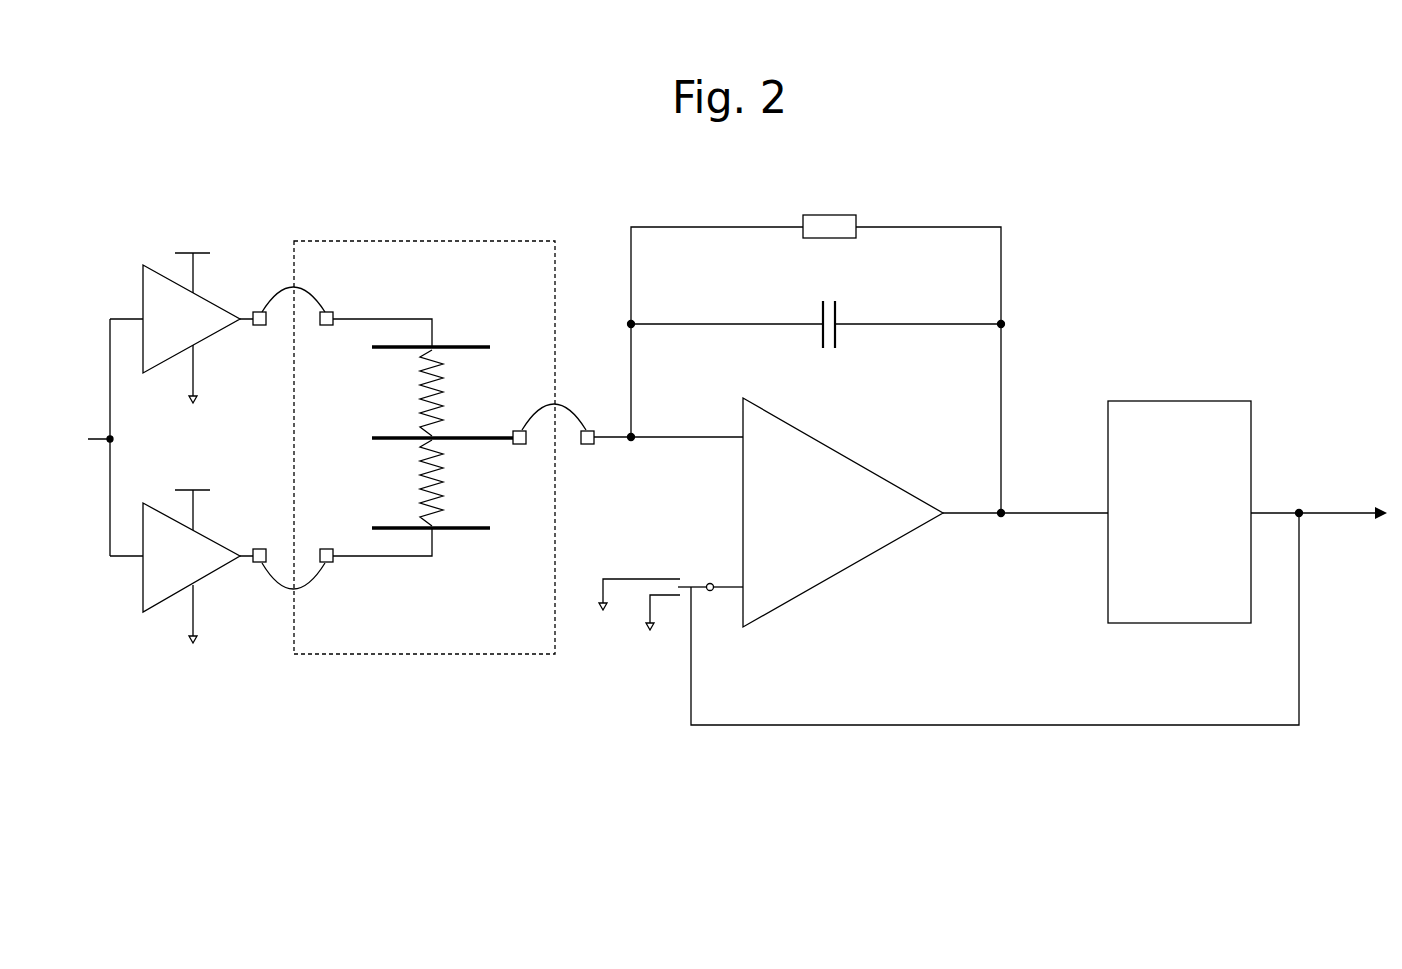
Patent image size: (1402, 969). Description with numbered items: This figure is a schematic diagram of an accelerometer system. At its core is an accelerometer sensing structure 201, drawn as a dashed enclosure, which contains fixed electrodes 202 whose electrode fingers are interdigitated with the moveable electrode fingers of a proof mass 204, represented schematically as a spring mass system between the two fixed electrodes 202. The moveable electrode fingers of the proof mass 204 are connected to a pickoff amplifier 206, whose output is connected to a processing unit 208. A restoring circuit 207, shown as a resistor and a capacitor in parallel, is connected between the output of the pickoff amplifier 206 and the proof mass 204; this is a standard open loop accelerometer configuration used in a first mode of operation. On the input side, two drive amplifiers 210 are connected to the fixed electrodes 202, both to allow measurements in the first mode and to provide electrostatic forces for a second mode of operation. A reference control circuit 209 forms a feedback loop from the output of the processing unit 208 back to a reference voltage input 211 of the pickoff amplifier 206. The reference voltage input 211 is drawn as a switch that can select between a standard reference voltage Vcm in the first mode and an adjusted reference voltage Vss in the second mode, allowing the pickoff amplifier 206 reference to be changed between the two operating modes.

The accelerometer sensing structure 201 is at (424, 411).
The fixed electrodes 202 is at (472, 346).
The proof mass 204 is at (383, 437).
The pickoff amplifier 206 is at (789, 522).
The restoring circuit 207 is at (1012, 242).
The processing unit 208 is at (1157, 514).
The reference control circuit 209 is at (983, 724).
The drive amplifiers 210 is at (156, 332).
The reference voltage input 211 is at (722, 585).